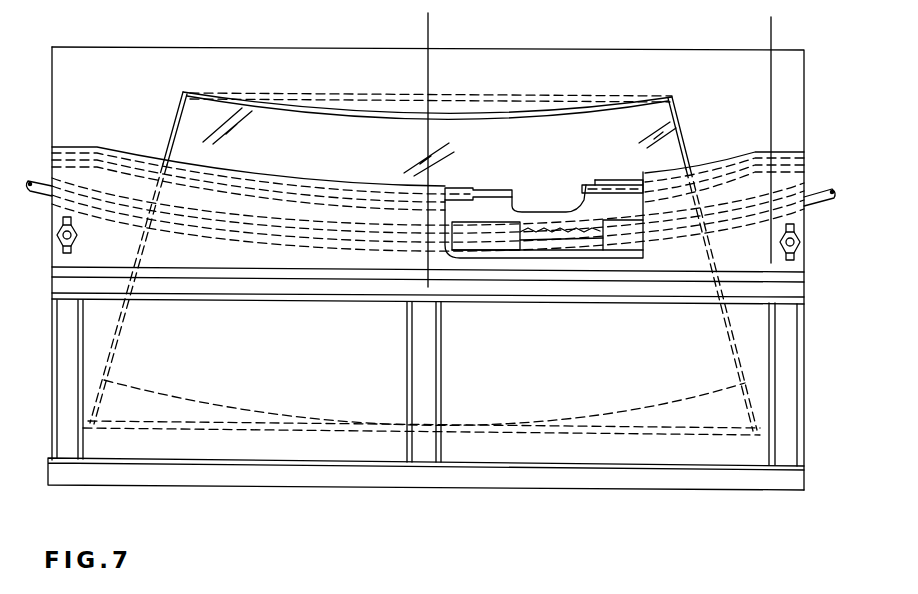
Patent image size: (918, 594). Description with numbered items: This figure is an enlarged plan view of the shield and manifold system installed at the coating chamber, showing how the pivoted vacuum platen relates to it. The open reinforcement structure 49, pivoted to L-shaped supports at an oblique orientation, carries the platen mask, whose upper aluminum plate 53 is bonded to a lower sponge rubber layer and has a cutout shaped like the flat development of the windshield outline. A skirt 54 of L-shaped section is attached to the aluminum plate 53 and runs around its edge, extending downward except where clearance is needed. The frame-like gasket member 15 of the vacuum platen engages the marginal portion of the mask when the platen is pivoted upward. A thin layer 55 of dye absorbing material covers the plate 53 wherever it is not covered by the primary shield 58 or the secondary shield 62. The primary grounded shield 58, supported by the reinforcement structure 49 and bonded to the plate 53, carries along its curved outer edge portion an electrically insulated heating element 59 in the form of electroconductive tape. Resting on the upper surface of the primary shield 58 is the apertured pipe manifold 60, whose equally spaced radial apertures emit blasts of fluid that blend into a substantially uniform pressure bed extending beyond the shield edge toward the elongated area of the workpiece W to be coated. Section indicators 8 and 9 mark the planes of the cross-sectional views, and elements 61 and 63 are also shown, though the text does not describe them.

The skirt 54 is at (131, 47).
The thin layer of dye absorbing material 55 is at (125, 119).
The frame-like gasket member 15 is at (279, 97).
The aluminum plate 53 is at (548, 116).
The secondary shield 62 is at (273, 172).
The mounting brackets 63 is at (459, 188).
The electrically insulated heating element 59 is at (514, 190).
The primary grounded shield 58 is at (610, 180).
The housing 61 is at (490, 222).
The apertured pipe manifold 60 is at (592, 221).
The open reinforcement structure 49 is at (802, 392).
The workpiece W is at (196, 427).
The section line 8 is at (443, 30).
The section line 9 is at (784, 32).